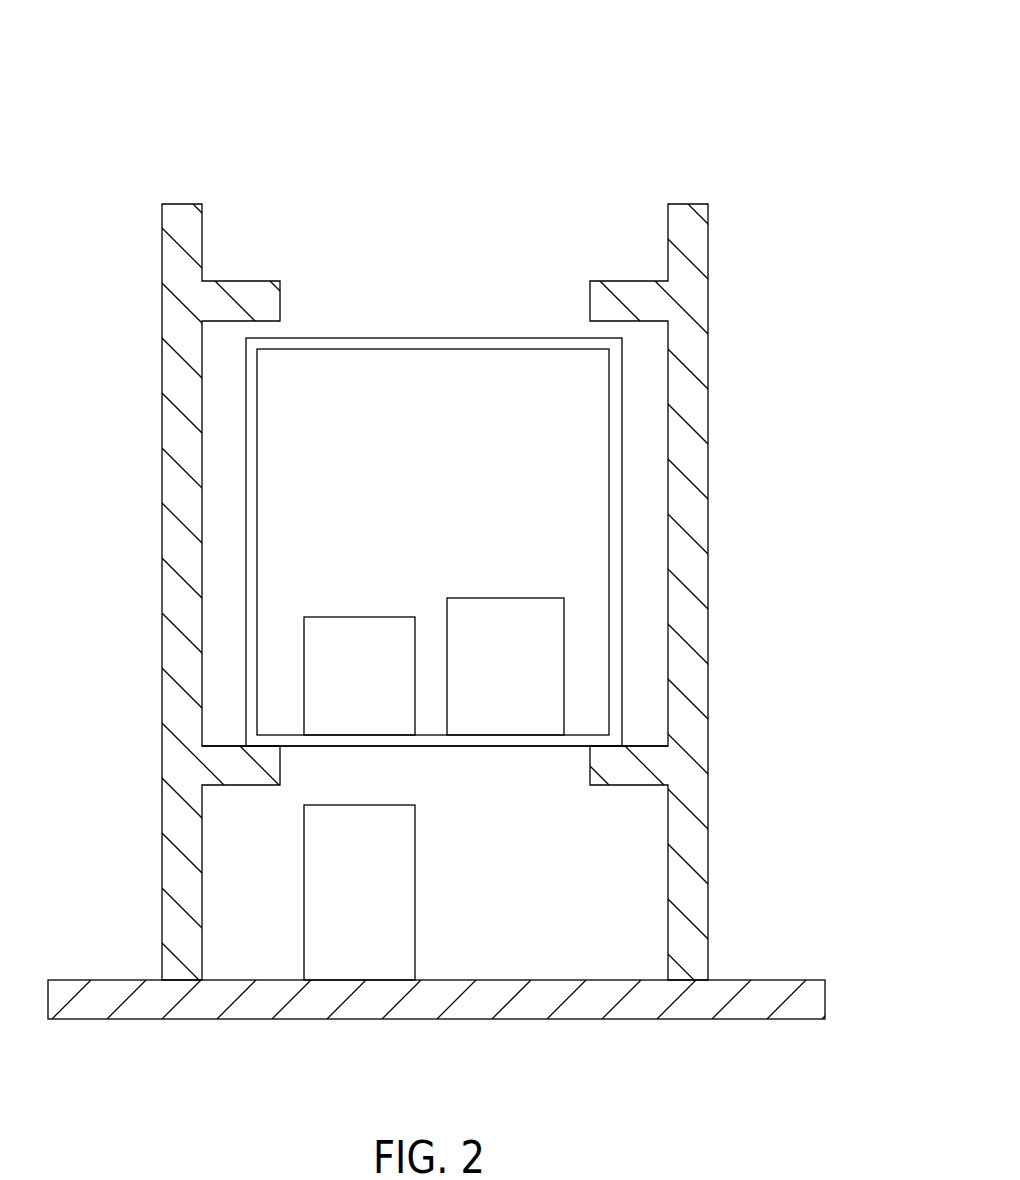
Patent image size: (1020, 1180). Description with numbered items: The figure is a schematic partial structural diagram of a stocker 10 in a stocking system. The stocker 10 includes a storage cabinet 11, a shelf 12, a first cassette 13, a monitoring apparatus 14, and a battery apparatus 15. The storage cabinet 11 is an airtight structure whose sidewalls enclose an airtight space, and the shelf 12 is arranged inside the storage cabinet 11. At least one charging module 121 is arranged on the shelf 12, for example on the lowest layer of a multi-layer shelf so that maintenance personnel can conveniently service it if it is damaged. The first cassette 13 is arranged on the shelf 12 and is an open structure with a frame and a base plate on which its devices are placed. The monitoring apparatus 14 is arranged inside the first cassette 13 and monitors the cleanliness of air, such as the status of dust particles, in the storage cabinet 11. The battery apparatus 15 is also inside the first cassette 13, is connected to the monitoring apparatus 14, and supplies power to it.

The stocker 10 is at (728, 135).
The storage cabinet 11 is at (468, 1003).
The shelf 12 is at (178, 880).
The charging module 121 is at (307, 932).
The first cassette 13 is at (614, 532).
The monitoring apparatus 14 is at (565, 690).
The battery apparatus 15 is at (307, 685).